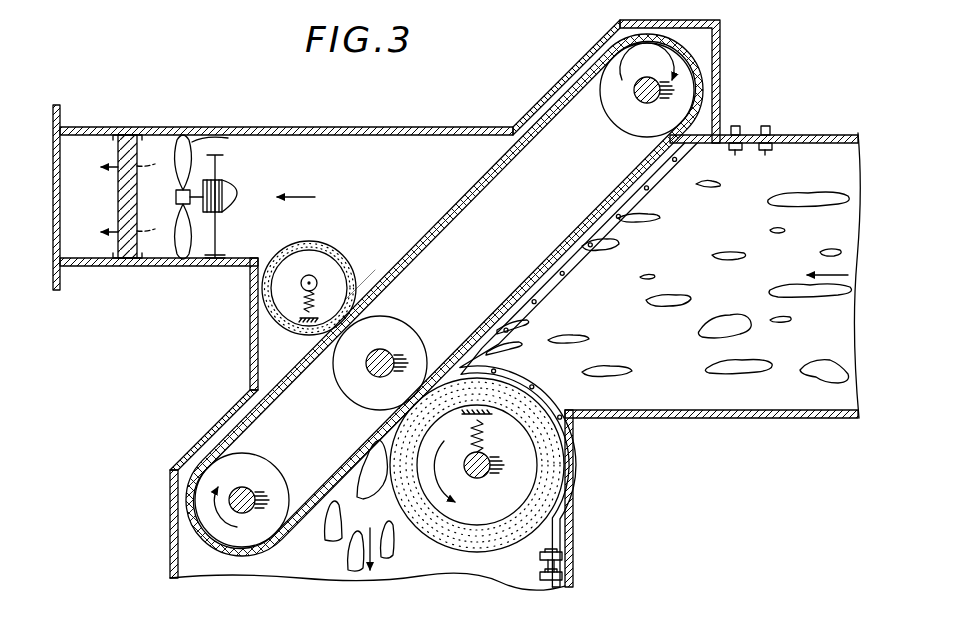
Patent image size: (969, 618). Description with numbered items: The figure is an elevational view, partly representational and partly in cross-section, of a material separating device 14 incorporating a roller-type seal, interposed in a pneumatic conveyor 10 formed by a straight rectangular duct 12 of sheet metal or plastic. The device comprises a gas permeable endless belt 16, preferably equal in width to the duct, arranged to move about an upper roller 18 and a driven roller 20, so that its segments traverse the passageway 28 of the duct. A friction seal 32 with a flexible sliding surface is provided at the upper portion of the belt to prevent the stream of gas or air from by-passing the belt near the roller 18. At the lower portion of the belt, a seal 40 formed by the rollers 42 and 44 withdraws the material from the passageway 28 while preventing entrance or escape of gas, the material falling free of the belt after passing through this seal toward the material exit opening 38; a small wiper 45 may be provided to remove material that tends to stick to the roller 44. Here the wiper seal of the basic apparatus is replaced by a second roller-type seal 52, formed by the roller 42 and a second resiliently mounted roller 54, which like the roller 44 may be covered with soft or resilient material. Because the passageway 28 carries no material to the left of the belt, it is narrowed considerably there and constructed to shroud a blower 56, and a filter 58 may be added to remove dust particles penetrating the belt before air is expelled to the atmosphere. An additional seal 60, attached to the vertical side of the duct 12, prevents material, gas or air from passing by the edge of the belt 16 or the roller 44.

The pneumatic conveyor 10 is at (846, 106).
The duct 12 is at (828, 114).
The material separating device 14 is at (627, 13).
The endless belt 16 is at (689, 63).
The roller 18 is at (612, 108).
The roller 20 is at (261, 483).
The passageway 28 is at (343, 184).
The friction seal 32 is at (694, 143).
The material exit opening 38 is at (429, 569).
The seal 40 is at (380, 418).
The roller 42 is at (389, 344).
The roller 44 is at (504, 501).
The wiper 45 is at (550, 534).
The roller-type seal 52 is at (368, 289).
The resiliently mounted roller 54 is at (318, 273).
The blower 56 is at (232, 190).
The filter 58 is at (136, 263).
The seal 60 is at (566, 267).